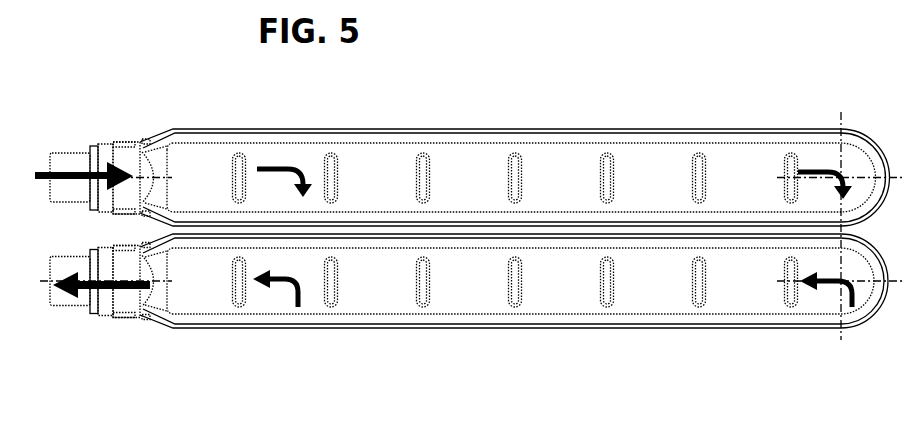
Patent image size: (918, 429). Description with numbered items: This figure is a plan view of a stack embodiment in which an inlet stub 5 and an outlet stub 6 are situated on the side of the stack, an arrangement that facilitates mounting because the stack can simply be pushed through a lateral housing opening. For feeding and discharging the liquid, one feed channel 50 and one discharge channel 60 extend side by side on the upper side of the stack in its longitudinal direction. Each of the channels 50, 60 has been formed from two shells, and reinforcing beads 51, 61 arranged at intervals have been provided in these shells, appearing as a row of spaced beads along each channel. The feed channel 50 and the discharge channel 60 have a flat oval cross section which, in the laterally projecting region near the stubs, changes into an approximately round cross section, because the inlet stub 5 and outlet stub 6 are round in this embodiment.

The inlet stub 5 is at (80, 165).
The outlet stub 6 is at (78, 295).
The feed channel 50 is at (458, 173).
The reinforcing beads 51 is at (515, 163).
The discharge channel 60 is at (468, 277).
The reinforcing beads 61 is at (607, 285).